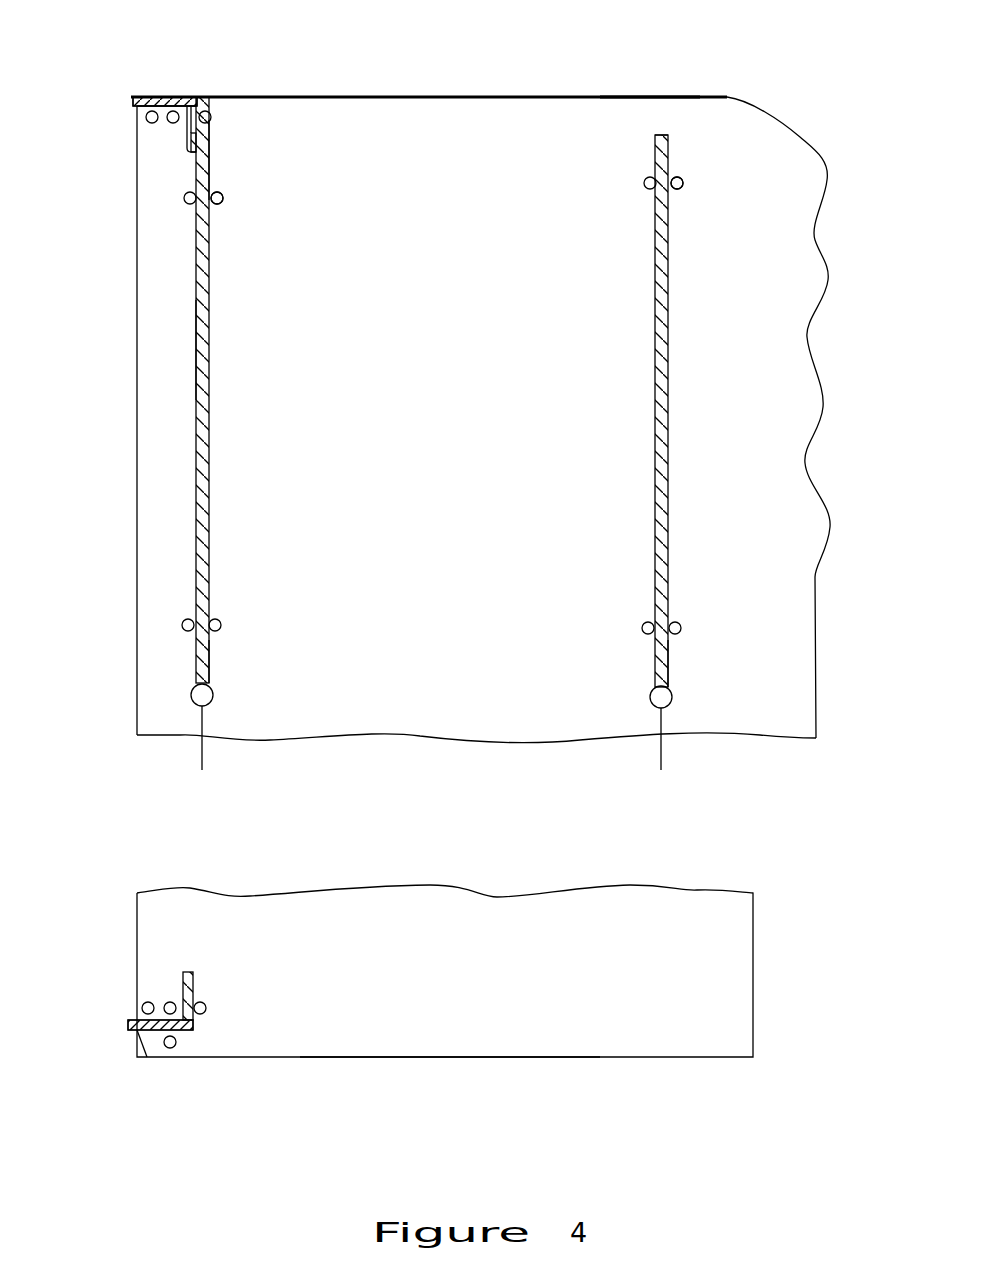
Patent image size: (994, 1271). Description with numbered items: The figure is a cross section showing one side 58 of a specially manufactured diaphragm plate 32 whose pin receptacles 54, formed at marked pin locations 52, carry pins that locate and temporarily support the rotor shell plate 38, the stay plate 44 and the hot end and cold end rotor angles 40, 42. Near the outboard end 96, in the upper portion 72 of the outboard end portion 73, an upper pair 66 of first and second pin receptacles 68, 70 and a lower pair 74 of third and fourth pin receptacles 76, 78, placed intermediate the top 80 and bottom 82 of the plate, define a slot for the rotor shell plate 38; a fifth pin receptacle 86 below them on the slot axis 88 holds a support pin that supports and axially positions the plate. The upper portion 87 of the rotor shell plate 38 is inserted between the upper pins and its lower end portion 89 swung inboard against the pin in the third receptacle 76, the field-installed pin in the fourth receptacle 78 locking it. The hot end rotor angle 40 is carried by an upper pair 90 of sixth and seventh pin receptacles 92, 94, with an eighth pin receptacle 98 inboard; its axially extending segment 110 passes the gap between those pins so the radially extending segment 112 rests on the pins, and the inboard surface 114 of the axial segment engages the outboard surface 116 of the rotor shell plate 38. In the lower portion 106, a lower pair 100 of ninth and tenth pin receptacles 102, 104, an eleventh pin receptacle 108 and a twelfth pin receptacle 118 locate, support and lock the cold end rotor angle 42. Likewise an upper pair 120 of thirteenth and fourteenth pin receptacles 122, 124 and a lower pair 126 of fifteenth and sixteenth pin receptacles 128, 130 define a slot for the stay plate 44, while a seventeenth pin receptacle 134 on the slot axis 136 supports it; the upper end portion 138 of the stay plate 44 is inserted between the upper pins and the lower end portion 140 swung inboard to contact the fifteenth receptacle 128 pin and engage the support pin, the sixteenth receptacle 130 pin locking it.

The diaphragm plate 32 is at (470, 97).
The rotor shell plate 38 is at (205, 419).
The hot end rotor angle 40 is at (165, 97).
The cold end rotor angle 42 is at (130, 1023).
The stay plate 44 is at (668, 418).
The pin location 52 is at (221, 193).
The pin receptacle 54 is at (681, 178).
The one side of the diaphragm plate 58 is at (508, 463).
The upper pair of pin receptacles 66 is at (152, 204).
The first pin receptacle 68 is at (189, 205).
The second pin receptacle 70 is at (219, 204).
The upper portion of the diaphragm plate 72 is at (768, 138).
The outboard end portion of the diaphragm plate 73 is at (180, 735).
The lower pair of pin receptacles 74 is at (150, 618).
The third pin receptacle 76 is at (219, 620).
The fourth pin receptacle 78 is at (186, 632).
The top of the diaphragm plate 80 is at (638, 97).
The bottom of the diaphragm plate 82 is at (415, 1058).
The fifth pin receptacle 86 is at (214, 695).
The upper portion of the rotor shell plate 87 is at (210, 156).
The axis of the slot 88 is at (203, 750).
The lower end portion of the rotor shell plate 89 is at (209, 660).
The upper pair of pin receptacles 90 is at (126, 110).
The sixth pin receptacle 92 is at (140, 123).
The seventh pin receptacle 94 is at (177, 113).
The outboard end of the diaphragm plate 96 is at (137, 492).
The eighth pin receptacle 98 is at (208, 112).
The lower pair of pin receptacles 100 is at (139, 940).
The ninth pin receptacle 102 is at (142, 1007).
The tenth pin receptacle 104 is at (176, 1013).
The lower portion of the diaphragm plate 106 is at (753, 988).
The eleventh pin receptacle 108 is at (206, 1008).
The axially extending segment 110 is at (183, 153).
The radially extending segment 112 is at (154, 97).
The inboard surface of the axially extending segment 114 is at (200, 135).
The outboard surface of the rotor shell plate 116 is at (196, 353).
The twelfth pin receptacle 118 is at (172, 1049).
The upper pair of pin receptacles 120 is at (617, 187).
The thirteenth pin receptacle 122 is at (648, 190).
The fourteenth pin receptacle 124 is at (680, 190).
The lower pair of pin receptacles 126 is at (608, 620).
The fifteenth pin receptacle 128 is at (680, 622).
The sixteenth pin receptacle 130 is at (645, 635).
The seventeenth pin receptacle 134 is at (673, 695).
The axis of the slot 136 is at (663, 752).
The upper end portion of the stay plate 138 is at (655, 137).
The lower end portion of the stay plate 140 is at (668, 660).